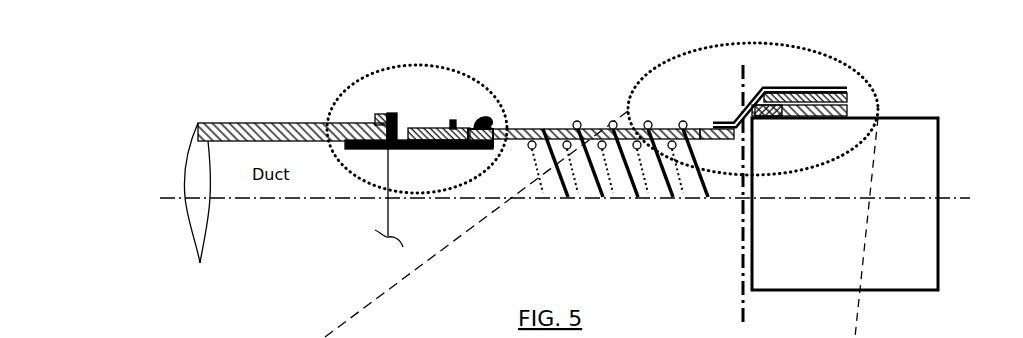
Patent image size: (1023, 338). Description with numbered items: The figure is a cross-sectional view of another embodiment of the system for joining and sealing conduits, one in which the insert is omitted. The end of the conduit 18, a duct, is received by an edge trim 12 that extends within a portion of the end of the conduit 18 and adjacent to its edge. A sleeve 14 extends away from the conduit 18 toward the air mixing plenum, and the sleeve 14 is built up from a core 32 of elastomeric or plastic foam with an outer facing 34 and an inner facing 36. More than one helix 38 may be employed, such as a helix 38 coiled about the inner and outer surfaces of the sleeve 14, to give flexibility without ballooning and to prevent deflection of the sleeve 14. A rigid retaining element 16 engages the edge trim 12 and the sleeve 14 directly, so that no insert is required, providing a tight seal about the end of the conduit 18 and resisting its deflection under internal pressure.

The edge trim 12 is at (387, 117).
The sleeve 14 is at (523, 129).
The retaining element 16 is at (453, 122).
The conduit 18 is at (258, 122).
The core 32 is at (430, 130).
The outer facing 34 is at (674, 128).
The inner facing 36 is at (727, 138).
The helix 38 is at (600, 127).